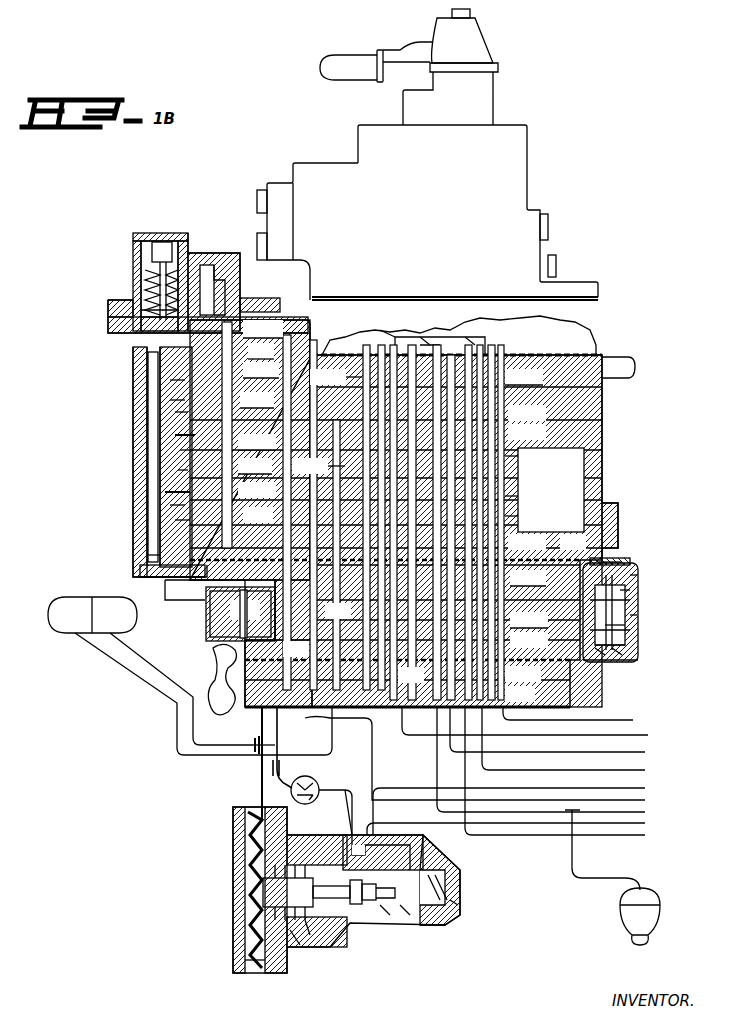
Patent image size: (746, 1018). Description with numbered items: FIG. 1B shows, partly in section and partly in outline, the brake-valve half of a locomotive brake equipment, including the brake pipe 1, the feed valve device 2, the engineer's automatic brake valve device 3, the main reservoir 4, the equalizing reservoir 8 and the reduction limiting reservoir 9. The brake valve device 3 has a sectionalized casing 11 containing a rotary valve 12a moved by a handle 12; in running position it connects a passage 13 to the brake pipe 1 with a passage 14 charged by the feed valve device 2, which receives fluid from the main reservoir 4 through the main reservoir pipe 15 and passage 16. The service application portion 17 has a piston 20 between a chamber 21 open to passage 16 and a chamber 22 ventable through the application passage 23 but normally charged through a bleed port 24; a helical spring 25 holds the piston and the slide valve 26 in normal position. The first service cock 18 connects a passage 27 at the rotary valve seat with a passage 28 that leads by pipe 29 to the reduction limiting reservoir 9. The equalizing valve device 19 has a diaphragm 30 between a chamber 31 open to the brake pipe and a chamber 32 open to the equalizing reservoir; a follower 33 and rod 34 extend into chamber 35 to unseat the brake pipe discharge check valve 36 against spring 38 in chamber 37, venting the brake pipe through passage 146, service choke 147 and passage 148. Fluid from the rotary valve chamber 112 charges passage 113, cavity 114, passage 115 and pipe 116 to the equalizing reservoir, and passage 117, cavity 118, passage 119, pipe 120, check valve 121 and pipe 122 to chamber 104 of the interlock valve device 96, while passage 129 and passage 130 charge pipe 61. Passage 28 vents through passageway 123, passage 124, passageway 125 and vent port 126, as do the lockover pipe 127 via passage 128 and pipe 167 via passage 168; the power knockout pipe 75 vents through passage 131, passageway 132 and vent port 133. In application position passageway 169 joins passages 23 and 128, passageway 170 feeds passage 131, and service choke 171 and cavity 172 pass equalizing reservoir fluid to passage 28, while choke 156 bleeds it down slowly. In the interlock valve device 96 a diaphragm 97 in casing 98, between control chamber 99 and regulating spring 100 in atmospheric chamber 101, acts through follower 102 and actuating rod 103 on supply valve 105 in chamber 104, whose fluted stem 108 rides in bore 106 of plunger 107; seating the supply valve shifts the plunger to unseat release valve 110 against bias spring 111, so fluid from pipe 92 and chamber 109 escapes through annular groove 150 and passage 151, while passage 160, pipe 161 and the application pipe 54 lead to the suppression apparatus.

The brake pipe 1 is at (645, 735).
The feed valve device 2 is at (213, 662).
The engineer's automatic brake valve device 3 is at (540, 107).
The main reservoir 4 is at (625, 930).
The equalizing reservoir 8 is at (70, 625).
The reduction limiting reservoir 9 is at (110, 625).
The sectionalized casing 11 is at (212, 265).
The handle 12 is at (340, 62).
The rotary valve 12a is at (565, 340).
The passage 13 is at (598, 460).
The passage 14 is at (300, 646).
The main reservoir pipe 15 is at (645, 812).
The main reservoir passage 16 is at (205, 585).
The service application portion 17 is at (165, 236).
The first service cock 18 is at (218, 612).
The equalizing valve device 19 is at (640, 626).
The piston 20 is at (108, 328).
The chamber 21 is at (155, 362).
The chamber 22 is at (137, 305).
The application passage 23 is at (185, 460).
The bleed port 24 is at (240, 305).
The helical spring 25 is at (150, 252).
The slide valve 26 is at (160, 555).
The passage 27 is at (210, 604).
The passage 28 is at (283, 650).
The pipe 29 is at (258, 765).
The flexible diaphragm 30 is at (630, 660).
The chamber 31 is at (616, 662).
The chamber 32 is at (628, 648).
The follower 33 is at (600, 662).
The rod 34 is at (625, 630).
The chamber 35 is at (634, 618).
The brake pipe discharge check valve 36 is at (632, 602).
The chamber 37 is at (633, 585).
The helical spring 38 is at (620, 565).
The application pipe 54 is at (640, 788).
The pipe 61 is at (633, 720).
The power knockout pipe 75 is at (653, 798).
The pipe 92 is at (645, 823).
The interlock valve device 96 is at (235, 903).
The flexible diaphragm 97 is at (248, 935).
The sectionalized casing 98 is at (245, 818).
The control chamber 99 is at (248, 845).
The helical regulating spring 100 is at (318, 920).
The atmospheric chamber 101 is at (285, 930).
The follower 102 is at (262, 878).
The actuating rod 103 is at (290, 860).
The chamber 104 is at (342, 898).
The supply valve 105 is at (360, 905).
The bore 106 is at (398, 902).
The plunger 107 is at (400, 920).
The fluted stem 108 is at (388, 918).
The chamber 109 is at (445, 925).
The release valve 110 is at (450, 870).
The helical bias spring 111 is at (458, 900).
The chamber 112 is at (385, 330).
The passage 113 is at (257, 400).
The cavity 114 is at (185, 445).
The passage 115 is at (390, 522).
The pipe 116 is at (135, 680).
The passage 117 is at (350, 500).
The cavity 118 is at (150, 553).
The passage 119 is at (258, 712).
The pipe 120 is at (278, 765).
The non-return check valve 121 is at (291, 792).
The pipe 122 is at (342, 811).
The passageway 123 is at (180, 395).
The passage 124 is at (160, 580).
The passageway 125 is at (470, 337).
The vent port 126 is at (338, 377).
The lockover pipe 127 is at (640, 752).
The passage 128 is at (520, 478).
The passage 129 is at (425, 337).
The passage 130 is at (500, 498).
The passage 131 is at (255, 466).
The passageway 132 is at (175, 500).
The vent port 133 is at (263, 330).
The passage 146 is at (490, 378).
The service choke 147 is at (500, 620).
The passage 148 is at (500, 578).
The annular groove 150 is at (375, 912).
The passage 151 is at (395, 845).
The choke 156 is at (172, 383).
The passage 160 is at (490, 470).
The pipe 161 is at (640, 770).
The pipe 167 is at (635, 835).
The passage 168 is at (485, 510).
The passageway 169 is at (170, 490).
The passageway 170 is at (182, 515).
The service choke 171 is at (180, 432).
The cavity 172 is at (185, 410).